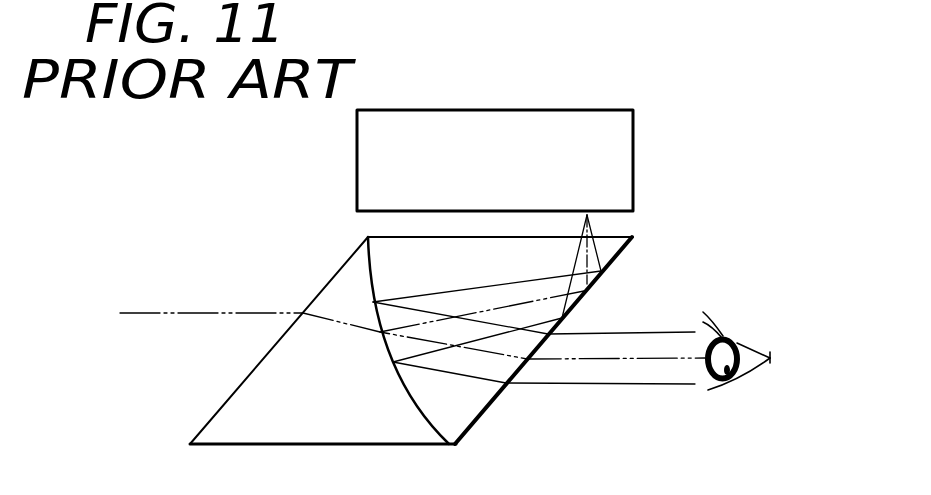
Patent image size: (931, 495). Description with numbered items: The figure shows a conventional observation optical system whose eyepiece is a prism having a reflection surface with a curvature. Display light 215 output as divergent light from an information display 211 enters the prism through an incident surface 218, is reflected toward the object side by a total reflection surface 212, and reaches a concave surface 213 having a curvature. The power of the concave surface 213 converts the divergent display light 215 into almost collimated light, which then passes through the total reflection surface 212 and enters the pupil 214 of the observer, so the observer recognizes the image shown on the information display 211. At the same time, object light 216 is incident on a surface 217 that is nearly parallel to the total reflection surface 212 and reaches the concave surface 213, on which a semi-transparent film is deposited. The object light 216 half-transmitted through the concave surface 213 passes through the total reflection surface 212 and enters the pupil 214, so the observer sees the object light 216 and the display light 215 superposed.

The information display 211 is at (357, 143).
The total reflection surface 212 is at (490, 403).
The concave surface 213 is at (366, 270).
The pupil 214 is at (756, 348).
The display light 215 is at (580, 250).
The object light 216 is at (137, 313).
The surface 217 is at (229, 401).
The incident surface 218 is at (618, 236).